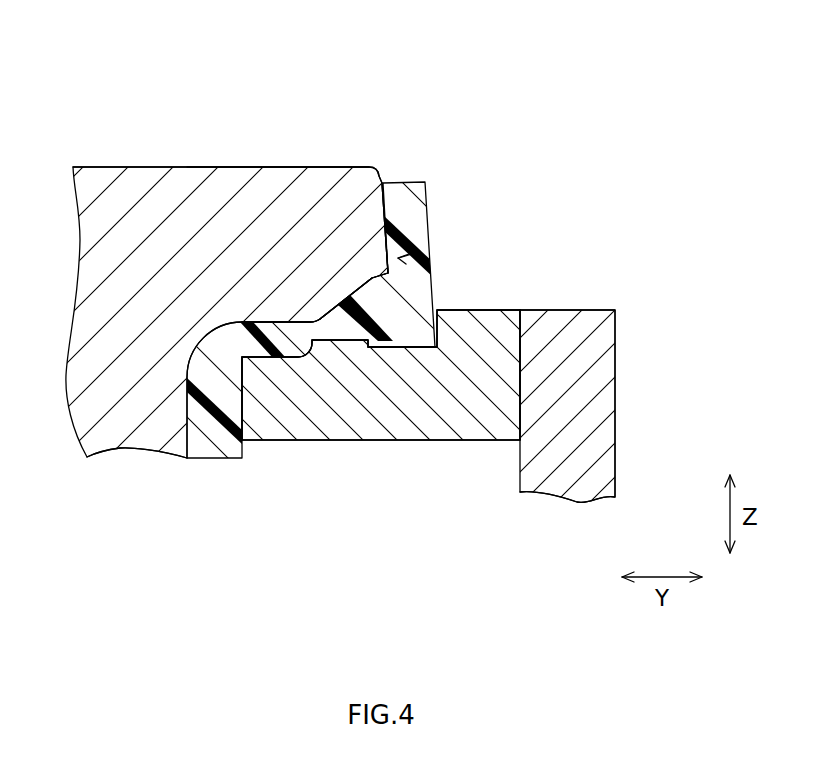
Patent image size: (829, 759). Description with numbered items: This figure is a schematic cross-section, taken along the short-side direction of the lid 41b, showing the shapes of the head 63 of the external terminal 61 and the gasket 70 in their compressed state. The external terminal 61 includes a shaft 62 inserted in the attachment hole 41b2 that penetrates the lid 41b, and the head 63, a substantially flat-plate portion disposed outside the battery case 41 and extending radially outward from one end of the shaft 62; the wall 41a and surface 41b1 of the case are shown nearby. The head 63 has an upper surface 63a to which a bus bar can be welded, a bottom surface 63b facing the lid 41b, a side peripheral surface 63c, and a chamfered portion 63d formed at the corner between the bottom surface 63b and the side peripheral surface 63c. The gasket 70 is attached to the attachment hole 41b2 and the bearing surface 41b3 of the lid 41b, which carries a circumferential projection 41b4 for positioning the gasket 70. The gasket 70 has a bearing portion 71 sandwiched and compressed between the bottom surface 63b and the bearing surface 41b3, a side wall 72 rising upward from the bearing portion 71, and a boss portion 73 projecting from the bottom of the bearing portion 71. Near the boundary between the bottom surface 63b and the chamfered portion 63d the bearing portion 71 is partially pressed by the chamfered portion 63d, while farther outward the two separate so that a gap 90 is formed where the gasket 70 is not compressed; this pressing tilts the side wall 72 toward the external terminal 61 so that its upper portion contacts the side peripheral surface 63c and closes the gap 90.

The battery case 41 is at (602, 202).
The vertical wall portion 41a is at (567, 310).
The lid 41b is at (520, 277).
The inner surface of bottom wall 41b1 is at (520, 374).
The attachment hole 41b2 is at (244, 410).
The bearing surface 41b3 is at (442, 332).
The projection 41b4 is at (360, 342).
The external terminal 61 is at (103, 100).
The shaft 62 is at (133, 428).
The head 63 is at (300, 140).
The upper surface 63a is at (186, 167).
The bottom surface 63b is at (261, 323).
The side peripheral surface 63c is at (388, 218).
The chamfered portion 63d is at (370, 306).
The gasket 70 is at (478, 156).
The bearing portion 71 is at (262, 325).
The side wall 72 is at (404, 196).
The boss portion 73 is at (217, 428).
The gap 90 is at (428, 238).